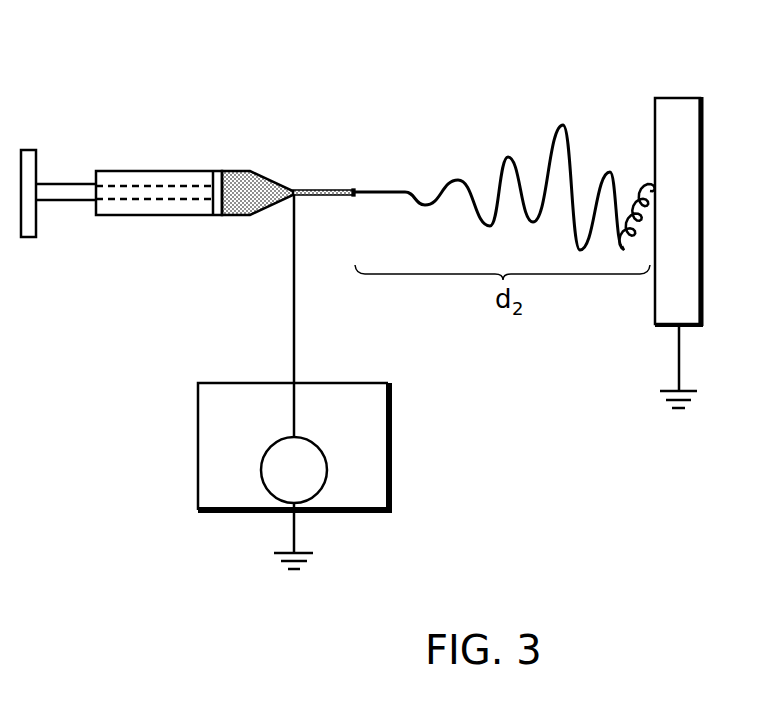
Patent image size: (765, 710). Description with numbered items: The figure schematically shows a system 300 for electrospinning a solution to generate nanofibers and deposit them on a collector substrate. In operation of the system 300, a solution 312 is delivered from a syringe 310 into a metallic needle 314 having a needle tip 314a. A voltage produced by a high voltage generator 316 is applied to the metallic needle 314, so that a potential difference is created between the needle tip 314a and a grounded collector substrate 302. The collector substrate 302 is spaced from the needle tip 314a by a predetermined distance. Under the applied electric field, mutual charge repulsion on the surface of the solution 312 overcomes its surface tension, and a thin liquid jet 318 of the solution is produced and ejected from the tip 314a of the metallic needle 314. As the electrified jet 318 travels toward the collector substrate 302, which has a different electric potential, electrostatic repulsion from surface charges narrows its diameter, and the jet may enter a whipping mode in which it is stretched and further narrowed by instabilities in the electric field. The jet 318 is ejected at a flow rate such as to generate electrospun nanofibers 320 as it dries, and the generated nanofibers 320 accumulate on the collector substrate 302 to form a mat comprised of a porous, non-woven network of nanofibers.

The system 300 is at (518, 36).
The collector substrate 302 is at (680, 97).
The syringe 310 is at (138, 216).
The solution 312 is at (240, 208).
The metallic needle 314 is at (304, 188).
The needle tip 314a is at (358, 199).
The high voltage generator 316 is at (198, 442).
The thin liquid jet 318 is at (382, 186).
The electrospun nanofibers 320 is at (634, 174).